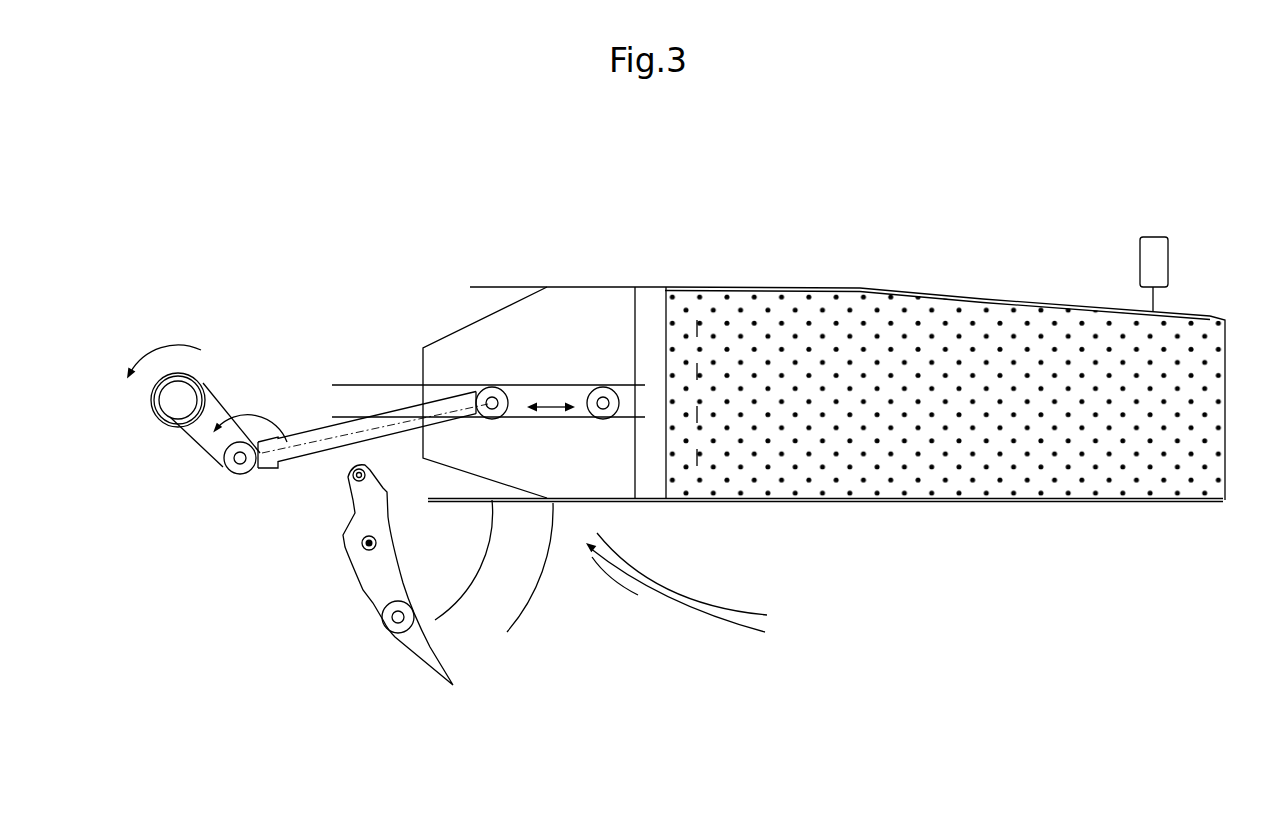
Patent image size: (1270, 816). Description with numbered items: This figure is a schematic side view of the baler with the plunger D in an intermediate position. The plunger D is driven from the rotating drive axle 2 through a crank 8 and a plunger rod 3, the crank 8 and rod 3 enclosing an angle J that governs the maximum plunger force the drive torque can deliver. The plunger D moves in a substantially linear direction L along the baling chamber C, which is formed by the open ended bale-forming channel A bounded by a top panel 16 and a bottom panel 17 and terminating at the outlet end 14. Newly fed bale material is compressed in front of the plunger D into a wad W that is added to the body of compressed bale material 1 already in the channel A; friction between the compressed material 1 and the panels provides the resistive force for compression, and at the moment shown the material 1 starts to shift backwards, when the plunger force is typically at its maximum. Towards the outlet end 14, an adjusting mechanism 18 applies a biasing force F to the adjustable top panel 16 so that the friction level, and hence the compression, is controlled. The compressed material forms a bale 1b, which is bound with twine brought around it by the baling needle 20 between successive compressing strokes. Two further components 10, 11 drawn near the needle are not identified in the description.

The compressed bale material 1 is at (807, 303).
The bale 1b is at (1063, 418).
The drive axle 2 is at (178, 400).
The plunger rod 3 is at (317, 437).
The crank 8 is at (198, 427).
The swing path 10 is at (508, 577).
The lever 11 is at (379, 593).
The outlet end 14 is at (1170, 503).
The top panel 16 is at (902, 292).
The bottom panel 17 is at (765, 502).
The adjusting mechanism 18 is at (1118, 217).
The baling needle 20 is at (743, 626).
The bale-forming channel A is at (983, 338).
The baling chamber C is at (962, 511).
The plunger D is at (473, 345).
The biasing force F is at (1150, 235).
The angle between crank and rod J is at (250, 416).
The linear direction L is at (547, 403).
The wad W is at (650, 302).